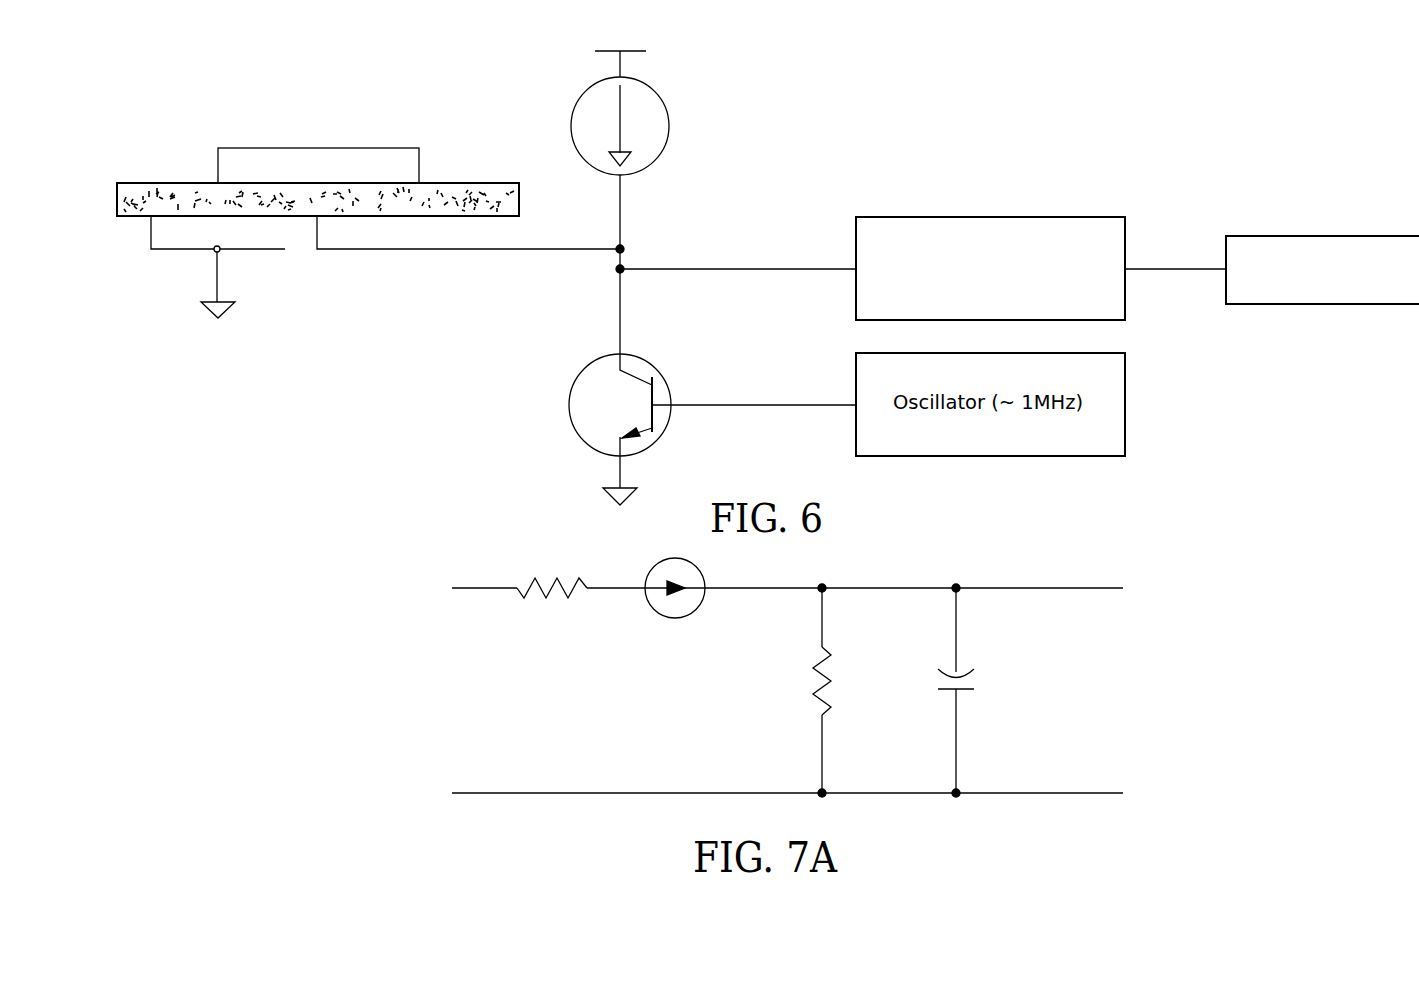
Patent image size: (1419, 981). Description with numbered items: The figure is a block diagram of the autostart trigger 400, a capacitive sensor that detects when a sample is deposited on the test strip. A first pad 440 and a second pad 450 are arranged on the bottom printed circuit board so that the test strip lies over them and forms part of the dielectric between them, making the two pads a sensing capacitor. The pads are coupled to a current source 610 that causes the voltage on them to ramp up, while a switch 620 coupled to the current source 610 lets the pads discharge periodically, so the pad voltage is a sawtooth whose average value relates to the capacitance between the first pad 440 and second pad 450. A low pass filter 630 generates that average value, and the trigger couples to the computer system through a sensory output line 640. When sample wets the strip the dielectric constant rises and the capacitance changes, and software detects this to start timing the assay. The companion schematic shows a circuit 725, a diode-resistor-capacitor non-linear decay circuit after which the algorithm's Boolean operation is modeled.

In FIG. 6, the autostart trigger 400 is at (365, 264).
In FIG. 6, the first pad 440 is at (192, 252).
In FIG. 6, the second pad 450 is at (412, 252).
In FIG. 6, the current source 610 is at (650, 103).
In FIG. 6, the switch 620 is at (596, 426).
In FIG. 6, the low pass filter 630 is at (1070, 227).
In FIG. 6, the sensory output line 640 is at (1322, 238).
In FIG. 7A, the circuit 725 is at (910, 566).